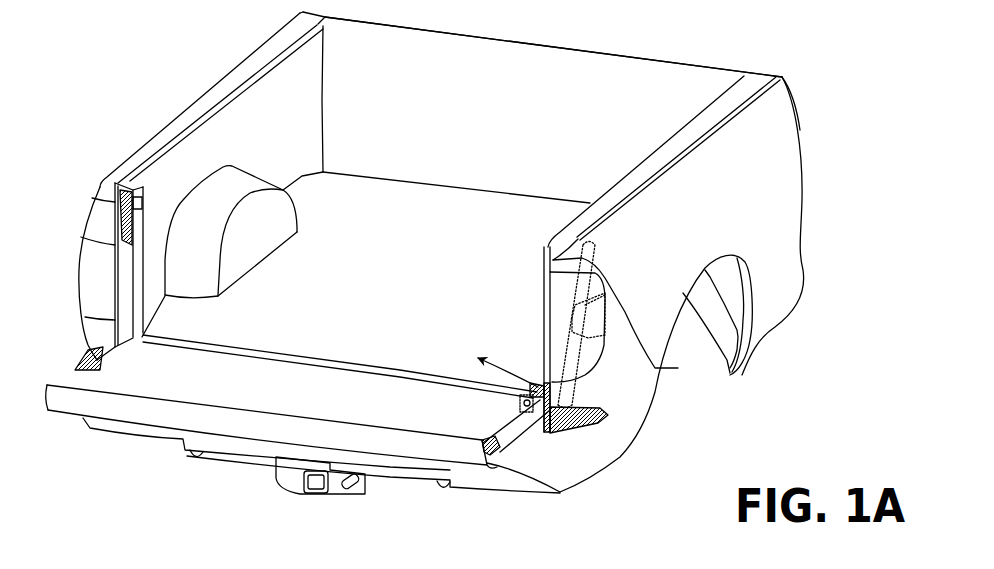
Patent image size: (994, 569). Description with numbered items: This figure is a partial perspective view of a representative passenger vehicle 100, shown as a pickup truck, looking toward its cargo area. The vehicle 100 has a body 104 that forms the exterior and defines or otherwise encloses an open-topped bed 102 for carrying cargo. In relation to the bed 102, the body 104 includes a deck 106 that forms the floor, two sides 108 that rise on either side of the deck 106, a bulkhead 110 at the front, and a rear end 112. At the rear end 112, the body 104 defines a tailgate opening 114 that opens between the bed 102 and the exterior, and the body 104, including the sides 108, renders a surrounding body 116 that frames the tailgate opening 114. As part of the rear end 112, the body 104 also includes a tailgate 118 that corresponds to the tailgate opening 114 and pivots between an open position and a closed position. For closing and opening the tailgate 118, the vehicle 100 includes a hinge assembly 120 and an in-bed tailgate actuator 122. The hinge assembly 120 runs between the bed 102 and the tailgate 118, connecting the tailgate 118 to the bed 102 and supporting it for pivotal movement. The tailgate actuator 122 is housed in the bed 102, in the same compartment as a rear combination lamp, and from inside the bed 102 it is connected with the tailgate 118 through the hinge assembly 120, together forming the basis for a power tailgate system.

The vehicle 100 is at (793, 82).
The bed 102 is at (763, 167).
The body 104 is at (803, 116).
The deck 106 is at (387, 192).
The sides 108 is at (310, 150).
The bulkhead 110 is at (567, 47).
The rear end 112 is at (600, 412).
The tailgate opening 114 is at (548, 433).
The surrounding body 116 is at (665, 368).
The tailgate 118 is at (508, 455).
The hinge assembly 120 is at (572, 393).
The in-bed tailgate actuator 122 is at (602, 298).